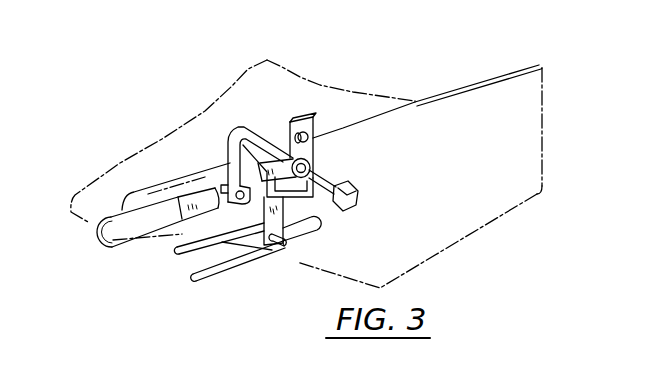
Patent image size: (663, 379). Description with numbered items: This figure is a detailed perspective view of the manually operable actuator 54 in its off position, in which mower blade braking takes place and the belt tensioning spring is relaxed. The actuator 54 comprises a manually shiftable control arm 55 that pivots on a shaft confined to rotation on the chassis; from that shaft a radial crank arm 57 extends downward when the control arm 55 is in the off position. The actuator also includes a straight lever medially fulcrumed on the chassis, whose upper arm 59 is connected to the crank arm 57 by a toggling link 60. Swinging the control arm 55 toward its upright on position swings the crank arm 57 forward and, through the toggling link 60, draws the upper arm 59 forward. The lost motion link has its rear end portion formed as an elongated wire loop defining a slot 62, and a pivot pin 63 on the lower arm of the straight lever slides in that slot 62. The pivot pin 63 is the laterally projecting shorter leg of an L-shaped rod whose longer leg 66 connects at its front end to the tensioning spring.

The actuator 54 is at (320, 104).
The control arm 55 is at (119, 237).
The crank arm 57 is at (233, 133).
The upper arm 59 is at (313, 150).
The toggling link 60 is at (282, 138).
The elongated slot 62 is at (320, 226).
The pivot pin 63 is at (281, 250).
The longer leg 66 is at (182, 254).